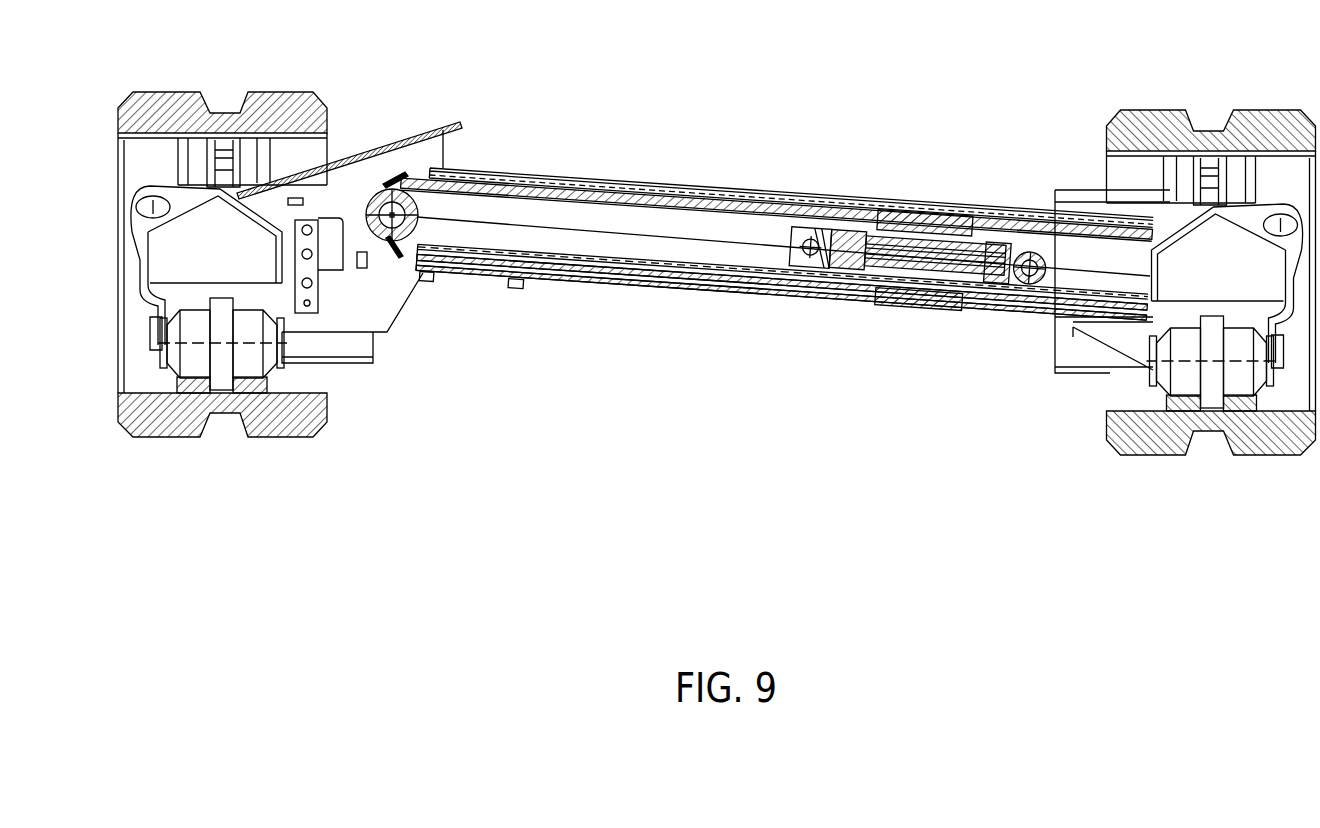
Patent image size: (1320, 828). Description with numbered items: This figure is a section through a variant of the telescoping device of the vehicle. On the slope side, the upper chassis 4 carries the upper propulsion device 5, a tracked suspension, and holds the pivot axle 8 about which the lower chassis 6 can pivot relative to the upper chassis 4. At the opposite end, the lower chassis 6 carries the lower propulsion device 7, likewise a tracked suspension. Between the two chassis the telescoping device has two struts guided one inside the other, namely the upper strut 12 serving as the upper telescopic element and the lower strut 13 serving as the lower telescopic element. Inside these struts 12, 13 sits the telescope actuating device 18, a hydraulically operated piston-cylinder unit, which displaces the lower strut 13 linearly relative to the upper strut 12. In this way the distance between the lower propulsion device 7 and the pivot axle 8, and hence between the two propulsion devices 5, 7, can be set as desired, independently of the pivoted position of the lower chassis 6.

The upper chassis 4 is at (348, 173).
The upper propulsion device 5 is at (167, 103).
The lower chassis 6 is at (1038, 452).
The lower propulsion device 7 is at (1260, 125).
The pivot axle 8 is at (385, 183).
The upper strut 12 is at (748, 278).
The lower strut 13 is at (633, 287).
The telescope actuating device 18 is at (907, 255).